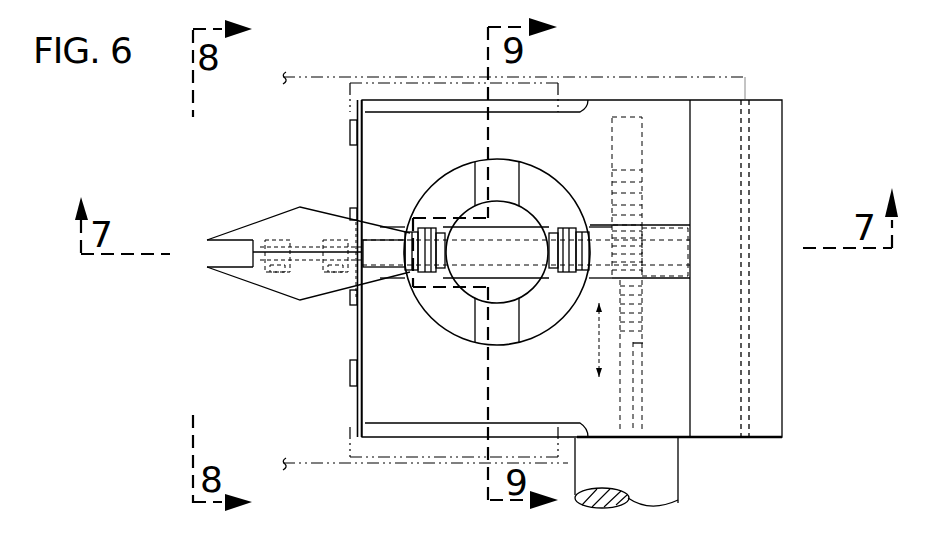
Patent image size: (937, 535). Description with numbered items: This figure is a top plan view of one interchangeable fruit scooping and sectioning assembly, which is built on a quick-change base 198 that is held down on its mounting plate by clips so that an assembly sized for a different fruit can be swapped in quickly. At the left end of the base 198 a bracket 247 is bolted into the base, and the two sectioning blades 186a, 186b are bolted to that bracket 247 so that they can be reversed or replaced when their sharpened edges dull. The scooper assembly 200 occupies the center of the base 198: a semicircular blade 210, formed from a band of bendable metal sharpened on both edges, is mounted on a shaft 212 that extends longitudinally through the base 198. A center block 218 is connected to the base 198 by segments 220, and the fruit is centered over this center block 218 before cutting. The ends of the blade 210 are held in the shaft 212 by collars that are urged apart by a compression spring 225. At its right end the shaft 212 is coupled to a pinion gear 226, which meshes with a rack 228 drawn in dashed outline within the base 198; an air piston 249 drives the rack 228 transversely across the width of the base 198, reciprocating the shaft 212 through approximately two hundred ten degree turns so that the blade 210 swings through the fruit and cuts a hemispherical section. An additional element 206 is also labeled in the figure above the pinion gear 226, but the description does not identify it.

The sectioning blade 186a is at (237, 228).
The sectioning blade 186b is at (257, 285).
The base 198 is at (772, 97).
The scooper assembly 200 is at (413, 353).
The upper guide member 206 is at (640, 170).
The semicircular blade 210 is at (440, 228).
The shaft 212 is at (428, 292).
The center block 218 is at (527, 226).
The segments 220 is at (487, 318).
The compression spring 225 is at (425, 235).
The pinion gear 226 is at (628, 223).
The rack 228 is at (633, 343).
The bracket 247 is at (385, 261).
The air piston 249 is at (634, 402).